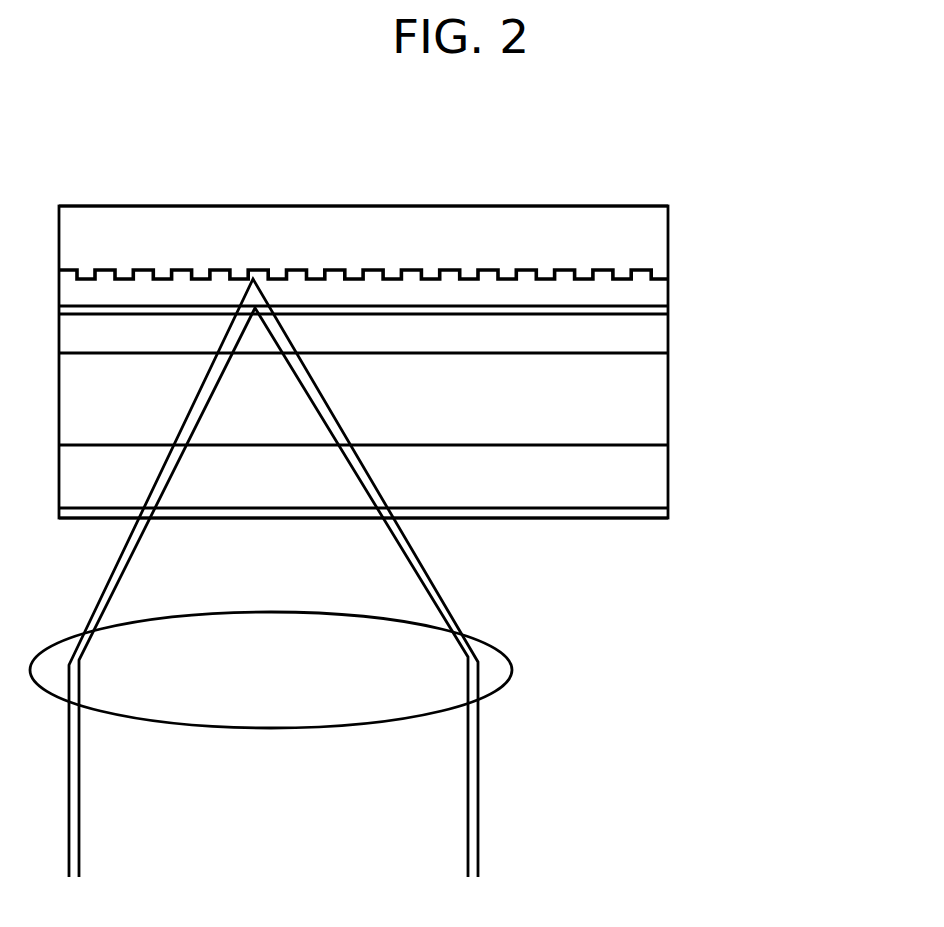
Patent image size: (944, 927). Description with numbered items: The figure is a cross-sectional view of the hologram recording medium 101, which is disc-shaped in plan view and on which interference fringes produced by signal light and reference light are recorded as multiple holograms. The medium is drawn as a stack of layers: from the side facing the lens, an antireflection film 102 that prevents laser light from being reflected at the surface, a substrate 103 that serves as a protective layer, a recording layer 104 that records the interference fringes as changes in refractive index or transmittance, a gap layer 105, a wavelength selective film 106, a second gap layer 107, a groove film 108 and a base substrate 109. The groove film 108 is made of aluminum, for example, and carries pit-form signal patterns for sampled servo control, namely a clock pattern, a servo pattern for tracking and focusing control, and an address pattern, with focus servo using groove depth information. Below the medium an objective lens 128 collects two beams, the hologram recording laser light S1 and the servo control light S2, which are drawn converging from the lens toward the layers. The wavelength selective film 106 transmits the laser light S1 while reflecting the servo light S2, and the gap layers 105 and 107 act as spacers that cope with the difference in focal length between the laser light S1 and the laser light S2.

The hologram recording medium 101 is at (485, 339).
The antireflection film 102 is at (433, 526).
The substrate 103 is at (655, 480).
The recording layer 104 is at (655, 413).
The gap layer 105 is at (658, 343).
The wavelength selective film 106 is at (655, 311).
The gap layer 107 is at (658, 292).
The groove film 108 is at (640, 268).
The base substrate 109 is at (650, 217).
The objective lens 128 is at (500, 675).
The hologram recording laser light S1 is at (470, 815).
The servo control light S2 is at (479, 756).